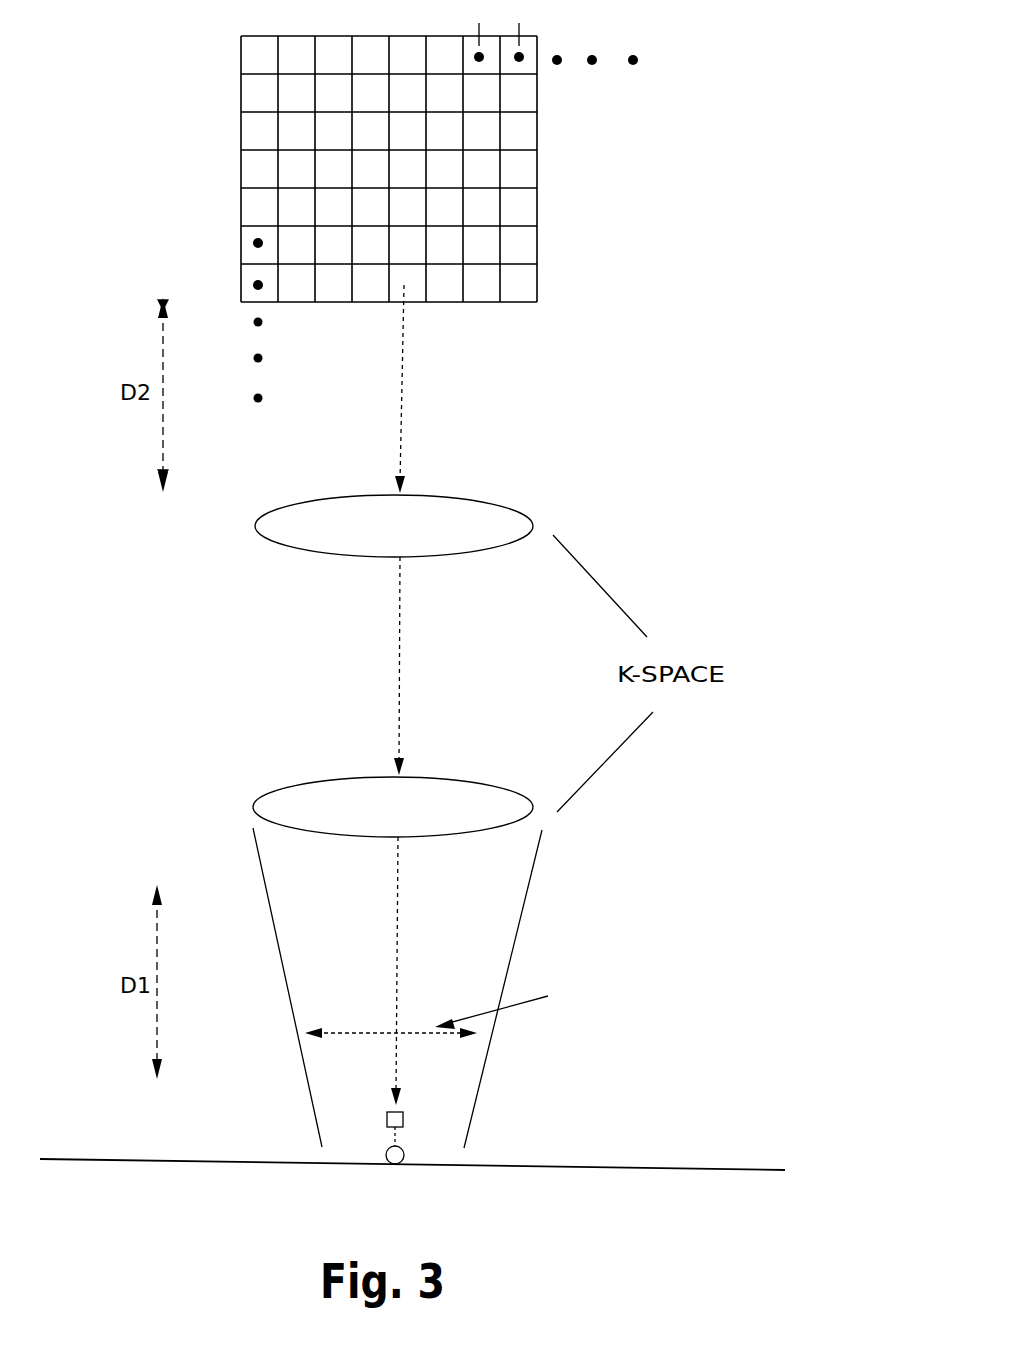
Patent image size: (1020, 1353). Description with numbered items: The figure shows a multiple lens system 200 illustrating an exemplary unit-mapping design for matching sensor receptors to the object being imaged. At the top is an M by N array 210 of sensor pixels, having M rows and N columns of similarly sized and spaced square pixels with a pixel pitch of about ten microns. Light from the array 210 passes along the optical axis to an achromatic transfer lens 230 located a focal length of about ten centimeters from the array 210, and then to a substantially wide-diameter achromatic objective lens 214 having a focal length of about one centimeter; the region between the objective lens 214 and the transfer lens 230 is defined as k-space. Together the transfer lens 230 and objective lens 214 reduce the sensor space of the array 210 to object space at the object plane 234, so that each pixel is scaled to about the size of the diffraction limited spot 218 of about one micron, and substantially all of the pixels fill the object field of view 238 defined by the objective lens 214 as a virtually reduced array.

The multiple lens system 200 is at (750, 37).
The M by N array of sensor pixels 210 is at (537, 175).
The achromatic objective lens 214 is at (458, 780).
The diffraction limited spot 218 is at (404, 1162).
The achromatic transfer lens 230 is at (495, 505).
The object plane 234 is at (502, 1163).
The object field of view 238 is at (408, 1033).